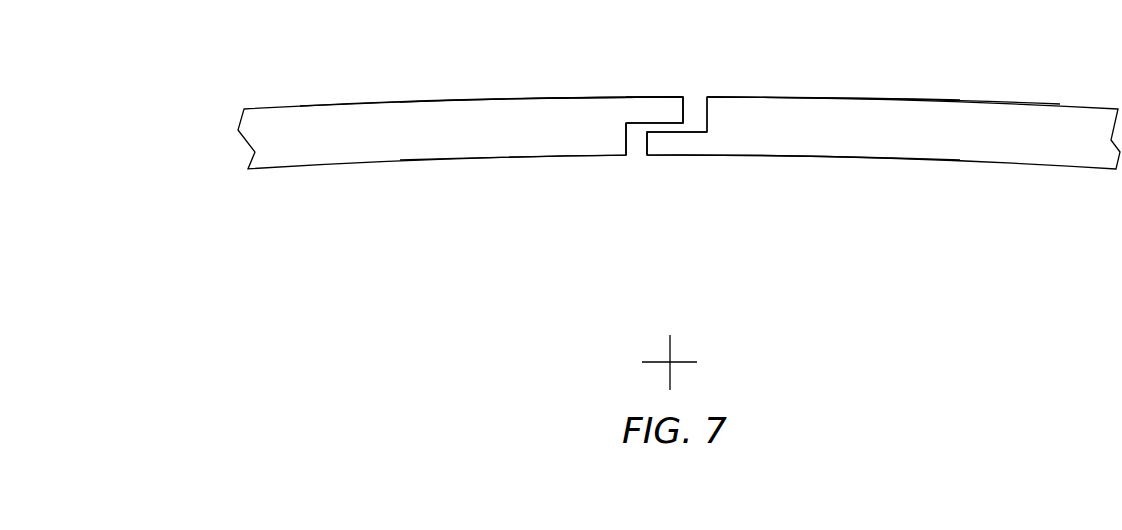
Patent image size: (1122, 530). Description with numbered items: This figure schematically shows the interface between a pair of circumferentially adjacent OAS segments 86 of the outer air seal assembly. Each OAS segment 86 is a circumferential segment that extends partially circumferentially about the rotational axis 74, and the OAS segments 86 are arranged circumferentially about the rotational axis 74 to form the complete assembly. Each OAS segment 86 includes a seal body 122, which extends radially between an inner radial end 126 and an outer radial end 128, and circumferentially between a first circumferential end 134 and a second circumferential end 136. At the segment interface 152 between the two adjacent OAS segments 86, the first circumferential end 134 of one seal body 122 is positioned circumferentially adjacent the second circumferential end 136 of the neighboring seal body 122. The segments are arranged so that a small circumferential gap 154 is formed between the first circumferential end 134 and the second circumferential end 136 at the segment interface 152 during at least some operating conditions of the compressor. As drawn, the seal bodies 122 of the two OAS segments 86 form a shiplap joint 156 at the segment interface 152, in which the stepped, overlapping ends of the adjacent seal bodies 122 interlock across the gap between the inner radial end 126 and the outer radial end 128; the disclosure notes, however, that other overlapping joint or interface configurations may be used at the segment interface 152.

The rotational axis 74 is at (683, 358).
The OAS segment 86 is at (384, 72).
The seal body 122 is at (492, 120).
The inner radial end 126 is at (456, 191).
The outer radial end 128 is at (452, 69).
The first circumferential end 134 is at (703, 74).
The second circumferential end 136 is at (637, 189).
The segment interface 152 is at (692, 187).
The circumferential gap 154 is at (618, 137).
The shiplap joint 156 is at (664, 91).